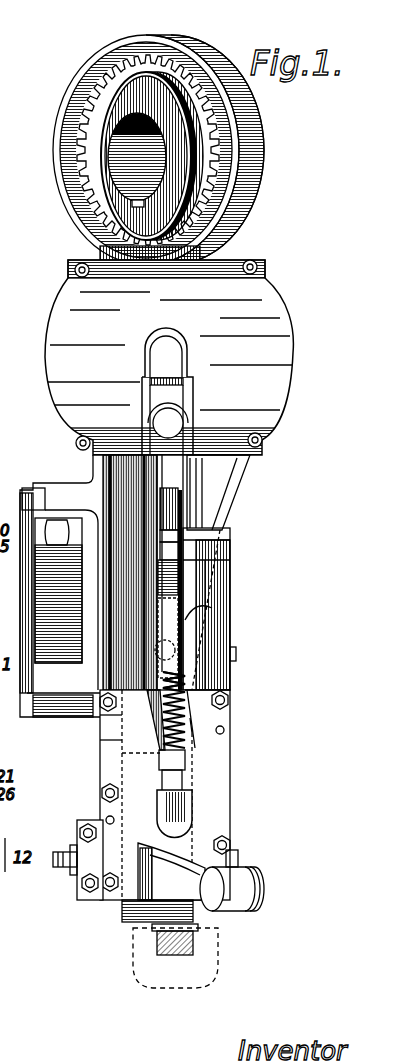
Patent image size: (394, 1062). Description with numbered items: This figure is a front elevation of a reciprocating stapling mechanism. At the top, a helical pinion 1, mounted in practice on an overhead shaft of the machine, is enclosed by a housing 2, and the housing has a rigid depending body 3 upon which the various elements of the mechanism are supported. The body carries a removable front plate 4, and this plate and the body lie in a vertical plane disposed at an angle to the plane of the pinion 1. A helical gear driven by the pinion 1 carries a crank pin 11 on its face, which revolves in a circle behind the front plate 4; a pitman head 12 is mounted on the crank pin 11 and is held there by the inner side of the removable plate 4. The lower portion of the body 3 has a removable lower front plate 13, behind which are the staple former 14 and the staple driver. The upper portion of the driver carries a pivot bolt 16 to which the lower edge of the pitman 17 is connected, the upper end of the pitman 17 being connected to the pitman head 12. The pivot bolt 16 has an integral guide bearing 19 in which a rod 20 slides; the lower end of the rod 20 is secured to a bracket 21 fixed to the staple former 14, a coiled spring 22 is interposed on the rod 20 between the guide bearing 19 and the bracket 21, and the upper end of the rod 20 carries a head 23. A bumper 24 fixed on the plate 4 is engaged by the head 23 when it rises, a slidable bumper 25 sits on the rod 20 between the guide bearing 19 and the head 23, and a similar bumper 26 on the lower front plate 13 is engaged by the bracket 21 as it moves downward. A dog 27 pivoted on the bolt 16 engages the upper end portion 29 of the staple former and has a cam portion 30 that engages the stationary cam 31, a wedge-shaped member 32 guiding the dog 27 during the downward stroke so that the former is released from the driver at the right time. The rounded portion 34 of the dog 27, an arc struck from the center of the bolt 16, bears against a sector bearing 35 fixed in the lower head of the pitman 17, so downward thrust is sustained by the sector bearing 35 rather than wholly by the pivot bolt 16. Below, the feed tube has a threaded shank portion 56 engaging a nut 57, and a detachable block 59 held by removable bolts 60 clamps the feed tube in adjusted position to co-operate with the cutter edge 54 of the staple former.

The helical pinion 1 is at (178, 133).
The housing 2 is at (117, 15).
The depending body 3 is at (219, 62).
The front plate 4 is at (170, 357).
The crank pin 11 is at (168, 423).
The pitman head 12 is at (167, 450).
The lower front plate 13 is at (213, 767).
The staple former 14 is at (123, 910).
The pivot bolt 16 is at (160, 650).
The pitman 17 is at (183, 553).
The guide bearing 19 is at (157, 605).
The rod 20 is at (183, 540).
The bracket 21 is at (192, 800).
The coiled spring 22 is at (183, 684).
The head 23 is at (170, 506).
The bumper 24 is at (187, 385).
The bumper 25 is at (190, 576).
The bumper 26 is at (188, 787).
The dog 27 is at (185, 688).
The upper end portion of the staple former 29 is at (190, 718).
The cam portion 30 is at (192, 712).
The stationary cam 31 is at (190, 628).
The wedge-shaped member 32 is at (205, 585).
The rounded portion 34 is at (236, 653).
The sector bearing 35 is at (212, 608).
The cutter edge 54 is at (128, 927).
The threaded shank portion 56 is at (67, 860).
The nut 57 is at (75, 872).
The detachable block 59 is at (100, 827).
The removable bolts 60 is at (83, 833).